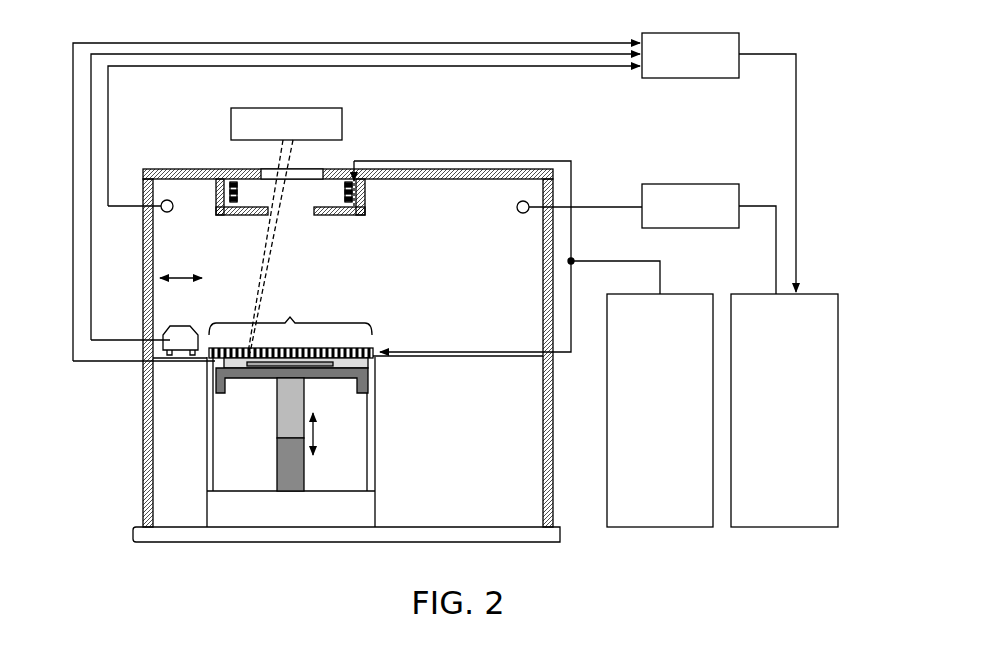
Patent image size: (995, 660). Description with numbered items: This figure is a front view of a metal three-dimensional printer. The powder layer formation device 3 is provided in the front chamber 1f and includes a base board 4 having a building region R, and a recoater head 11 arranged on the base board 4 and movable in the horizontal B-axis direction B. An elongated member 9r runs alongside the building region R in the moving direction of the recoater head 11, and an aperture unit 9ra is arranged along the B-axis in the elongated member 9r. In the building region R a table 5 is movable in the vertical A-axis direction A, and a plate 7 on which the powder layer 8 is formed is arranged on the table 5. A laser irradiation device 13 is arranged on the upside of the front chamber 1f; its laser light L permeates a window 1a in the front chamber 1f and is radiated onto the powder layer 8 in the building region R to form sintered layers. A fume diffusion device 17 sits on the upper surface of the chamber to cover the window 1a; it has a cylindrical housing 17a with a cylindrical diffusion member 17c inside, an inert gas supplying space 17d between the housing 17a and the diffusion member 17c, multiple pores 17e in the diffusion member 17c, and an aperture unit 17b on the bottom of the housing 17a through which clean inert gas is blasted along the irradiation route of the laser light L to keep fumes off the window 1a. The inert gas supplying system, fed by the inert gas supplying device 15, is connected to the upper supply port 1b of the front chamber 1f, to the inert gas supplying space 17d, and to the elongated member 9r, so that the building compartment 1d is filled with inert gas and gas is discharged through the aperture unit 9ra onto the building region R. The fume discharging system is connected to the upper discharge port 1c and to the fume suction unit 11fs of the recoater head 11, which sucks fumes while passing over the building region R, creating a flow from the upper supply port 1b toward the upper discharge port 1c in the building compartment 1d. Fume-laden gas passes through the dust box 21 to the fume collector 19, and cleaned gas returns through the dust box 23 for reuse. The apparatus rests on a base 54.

The window 1a is at (270, 168).
The upper supply port 1b is at (519, 212).
The upper discharge port 1c is at (172, 211).
The building compartment 1d is at (348, 264).
The front chamber 1f is at (165, 169).
The powder layer formation device 3 is at (403, 334).
The base board 4 is at (199, 362).
The table 5 is at (370, 378).
The plate 7 is at (370, 368).
The powder layer 8 is at (368, 361).
The elongated member 9r is at (291, 339).
The aperture unit 9ra is at (291, 348).
The recoater head 11 is at (195, 319).
The fume suction unit 11fs is at (199, 333).
The laser irradiation device 13 is at (315, 108).
The inert gas supplying device 15 is at (676, 294).
The fume diffusion device 17 is at (321, 201).
The housing 17a is at (366, 194).
The aperture unit 17b is at (304, 216).
The diffusion member 17c is at (344, 195).
The inert gas supplying space 17d is at (354, 208).
The pores 17e is at (343, 188).
The fume collector 19 is at (812, 294).
The dust box 21 is at (702, 38).
The dust box 23 is at (702, 190).
The base 54 is at (500, 540).
The A-axis direction A is at (322, 434).
The B-axis direction B is at (181, 268).
The laser light L is at (268, 260).
The building region R is at (290, 316).